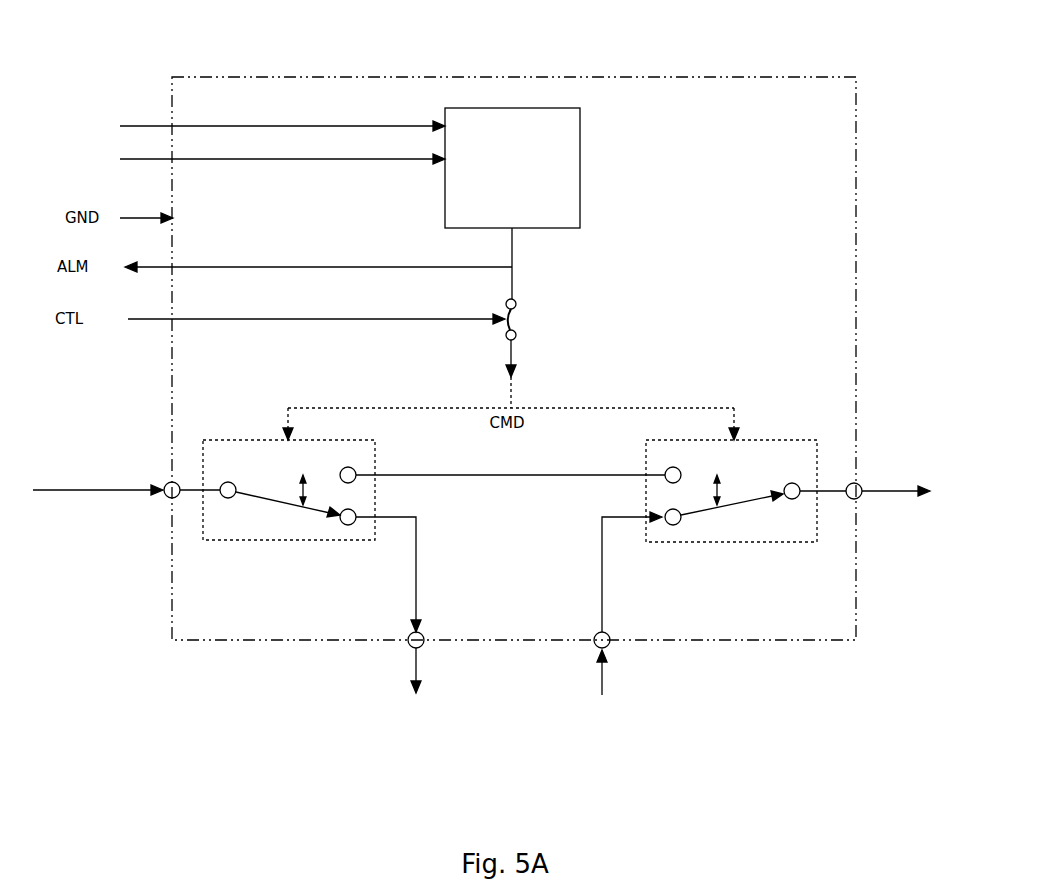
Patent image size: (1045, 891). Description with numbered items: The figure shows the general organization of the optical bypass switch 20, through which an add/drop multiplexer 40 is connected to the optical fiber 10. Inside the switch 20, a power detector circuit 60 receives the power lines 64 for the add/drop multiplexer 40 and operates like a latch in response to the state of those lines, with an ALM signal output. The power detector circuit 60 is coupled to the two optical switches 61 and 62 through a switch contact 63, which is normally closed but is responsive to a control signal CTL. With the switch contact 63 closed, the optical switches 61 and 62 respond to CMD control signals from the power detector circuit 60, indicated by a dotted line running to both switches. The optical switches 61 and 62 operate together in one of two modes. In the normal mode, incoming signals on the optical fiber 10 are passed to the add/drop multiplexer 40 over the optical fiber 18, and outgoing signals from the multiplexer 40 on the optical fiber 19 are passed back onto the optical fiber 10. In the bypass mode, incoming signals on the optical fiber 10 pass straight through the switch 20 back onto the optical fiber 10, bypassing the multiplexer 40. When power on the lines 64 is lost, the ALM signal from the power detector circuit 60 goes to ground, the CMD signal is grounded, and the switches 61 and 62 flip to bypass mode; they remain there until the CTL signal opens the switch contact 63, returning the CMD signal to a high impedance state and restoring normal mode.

The optical bypass switch 20 is at (740, 77).
The power lines 64 is at (300, 121).
The power detector circuit 60 is at (580, 142).
The switch contact 63 is at (490, 295).
The optical switch 61 is at (230, 440).
The optical switch 62 is at (778, 440).
The optical fiber 10 is at (110, 489).
The optical fiber 18 is at (410, 673).
The optical fiber 19 is at (607, 676).
The add/drop multiplexer 40 is at (514, 761).